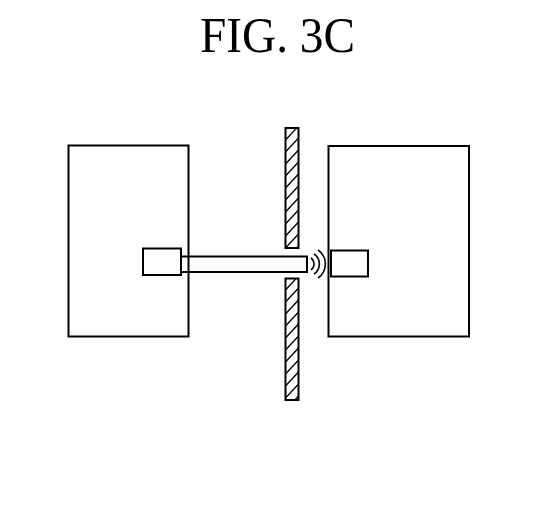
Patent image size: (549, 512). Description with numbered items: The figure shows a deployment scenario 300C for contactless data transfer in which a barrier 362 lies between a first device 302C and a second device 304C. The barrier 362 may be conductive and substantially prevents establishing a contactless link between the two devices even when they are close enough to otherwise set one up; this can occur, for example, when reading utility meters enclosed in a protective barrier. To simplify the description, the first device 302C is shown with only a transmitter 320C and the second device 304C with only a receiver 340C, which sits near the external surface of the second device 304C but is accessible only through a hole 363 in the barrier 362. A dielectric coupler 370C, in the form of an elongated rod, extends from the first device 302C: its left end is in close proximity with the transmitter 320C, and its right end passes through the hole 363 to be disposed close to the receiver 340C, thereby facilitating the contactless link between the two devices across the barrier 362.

The scenario 300C is at (188, 97).
The first device 302C is at (160, 326).
The second device 304C is at (437, 326).
The transmitter 320C is at (162, 248).
The receiver 340C is at (348, 250).
The barrier 362 is at (285, 157).
The hole 363 is at (284, 278).
The dielectric coupler 370C is at (216, 256).